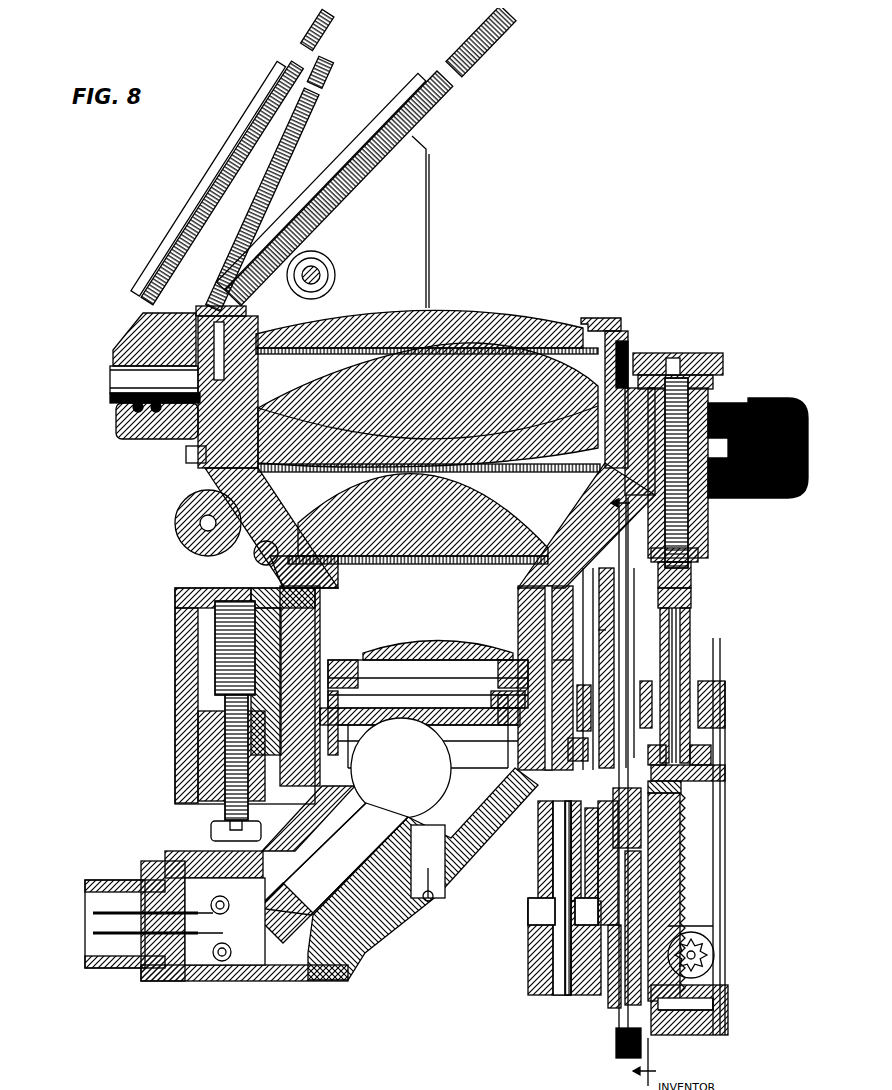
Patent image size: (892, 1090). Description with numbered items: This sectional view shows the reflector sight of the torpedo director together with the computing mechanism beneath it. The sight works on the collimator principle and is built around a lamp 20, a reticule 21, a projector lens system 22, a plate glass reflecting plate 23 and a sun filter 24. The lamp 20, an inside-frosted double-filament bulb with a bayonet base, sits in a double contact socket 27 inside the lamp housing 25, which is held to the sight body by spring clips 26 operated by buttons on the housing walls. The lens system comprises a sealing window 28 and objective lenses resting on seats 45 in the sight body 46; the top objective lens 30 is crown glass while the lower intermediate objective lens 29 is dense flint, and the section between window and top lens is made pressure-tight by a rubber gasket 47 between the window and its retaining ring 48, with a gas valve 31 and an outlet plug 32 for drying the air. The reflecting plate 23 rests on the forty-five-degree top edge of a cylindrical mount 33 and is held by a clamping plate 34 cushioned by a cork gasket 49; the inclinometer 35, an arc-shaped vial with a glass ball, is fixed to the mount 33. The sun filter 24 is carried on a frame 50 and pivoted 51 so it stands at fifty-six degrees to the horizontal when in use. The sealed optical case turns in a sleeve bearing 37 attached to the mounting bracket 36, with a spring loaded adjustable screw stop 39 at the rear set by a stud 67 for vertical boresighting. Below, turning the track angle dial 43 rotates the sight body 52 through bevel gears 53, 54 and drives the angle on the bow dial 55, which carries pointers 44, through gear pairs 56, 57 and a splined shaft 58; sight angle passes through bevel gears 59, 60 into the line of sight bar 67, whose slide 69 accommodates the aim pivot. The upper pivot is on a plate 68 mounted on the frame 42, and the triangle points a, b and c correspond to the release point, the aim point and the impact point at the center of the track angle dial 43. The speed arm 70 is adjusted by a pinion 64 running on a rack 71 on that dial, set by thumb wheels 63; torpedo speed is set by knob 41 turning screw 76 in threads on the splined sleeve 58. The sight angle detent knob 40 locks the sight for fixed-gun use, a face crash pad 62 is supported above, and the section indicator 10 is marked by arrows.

The section line 10 is at (645, 790).
The lamp 20 is at (396, 872).
The reticule 21 is at (205, 637).
The projector lens system 22 is at (468, 468).
The reflecting plate 23 is at (440, 100).
The sun filter 24 is at (232, 163).
The lamp housing 25 is at (320, 975).
The spring clips 26 is at (424, 893).
The double contact socket 27 is at (280, 975).
The sealing window 28 is at (398, 640).
The lower intermediate objective lens 29 is at (176, 457).
The top objective lens 30 is at (362, 300).
The gas valve 31 is at (170, 500).
The outlet plug 32 is at (250, 540).
The cylindrical mount 33 is at (392, 181).
The clamping plate 34 is at (370, 117).
The inclinometer 35 is at (323, 250).
The mounting bracket 36 is at (188, 774).
The sleeve bearing 37 is at (268, 724).
The adjustable screw stop 39 is at (215, 654).
The sight angle detent knob 40 is at (520, 968).
The knob 41 is at (717, 355).
The frame 42 is at (655, 559).
The track angle dial 43 is at (722, 991).
The pointer 44 is at (185, 305).
The seats 45 is at (598, 348).
The sight body 46 is at (560, 667).
The rubber gasket 47 is at (548, 655).
The retaining ring 48 is at (438, 660).
The cork gasket 49 is at (238, 268).
The frame 50 is at (160, 320).
The pivot 51 is at (100, 375).
The sight body 52 is at (268, 577).
The bevel gear 53 is at (715, 714).
The bevel gear 54 is at (712, 744).
The angle on the bow dial 55 is at (620, 338).
The gear pair 56 is at (707, 373).
The gear pair 57 is at (108, 406).
The splined shaft 58 is at (683, 644).
The bevel gear 59 is at (660, 779).
The bevel gear 60 is at (640, 791).
The face crash pad 62 is at (772, 392).
The thumb wheels 63 is at (708, 934).
The pinion 64 is at (690, 950).
The stud 67 is at (200, 831).
The plate 68 is at (655, 631).
The slide 69 is at (598, 984).
The speed arm 70 is at (676, 921).
The rack 71 is at (655, 819).
The screw 76 is at (668, 517).
The point a is at (592, 622).
The point b is at (611, 1019).
The point c is at (695, 941).